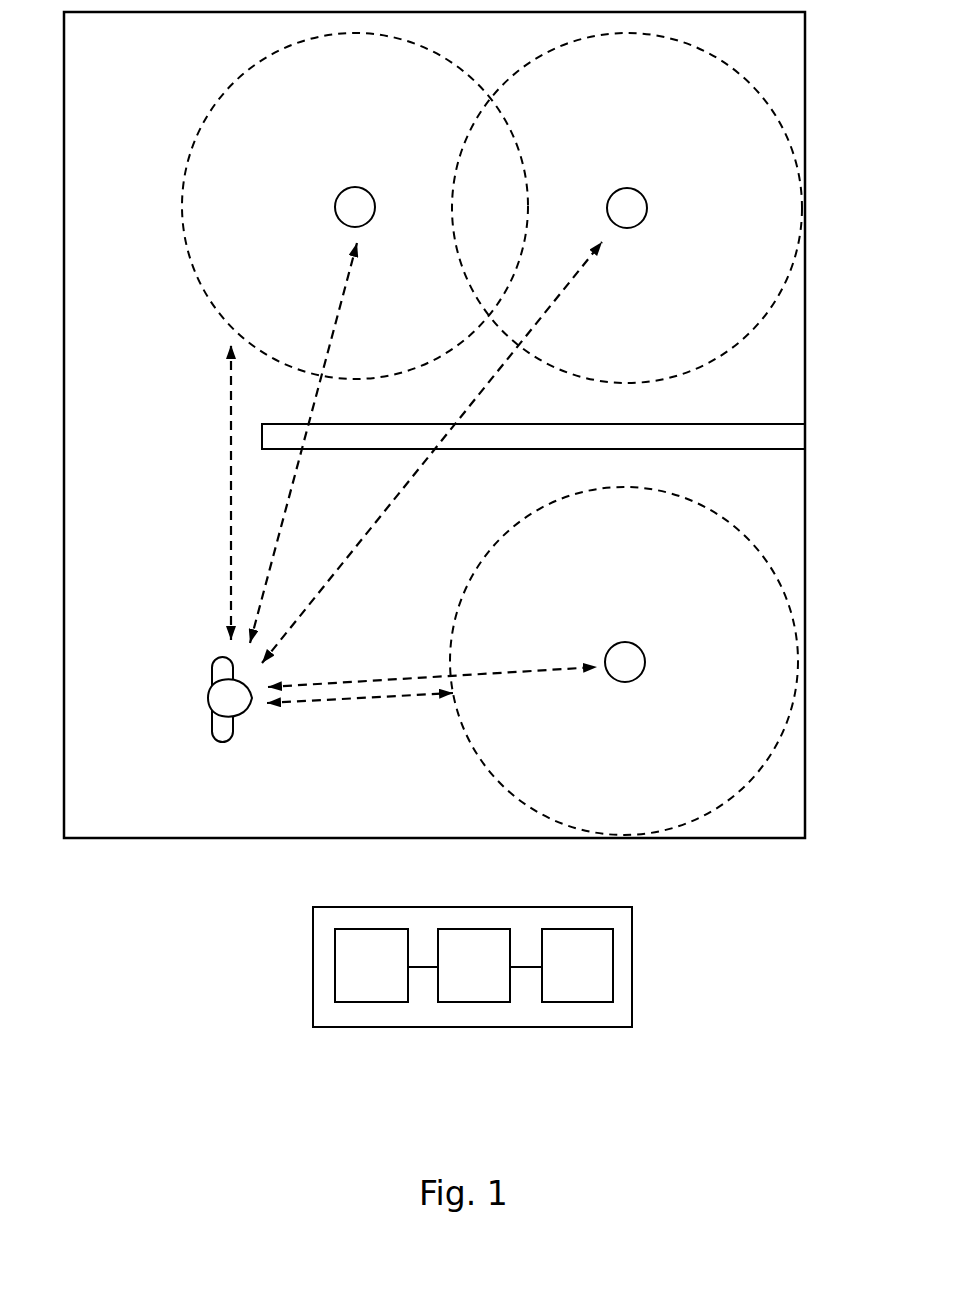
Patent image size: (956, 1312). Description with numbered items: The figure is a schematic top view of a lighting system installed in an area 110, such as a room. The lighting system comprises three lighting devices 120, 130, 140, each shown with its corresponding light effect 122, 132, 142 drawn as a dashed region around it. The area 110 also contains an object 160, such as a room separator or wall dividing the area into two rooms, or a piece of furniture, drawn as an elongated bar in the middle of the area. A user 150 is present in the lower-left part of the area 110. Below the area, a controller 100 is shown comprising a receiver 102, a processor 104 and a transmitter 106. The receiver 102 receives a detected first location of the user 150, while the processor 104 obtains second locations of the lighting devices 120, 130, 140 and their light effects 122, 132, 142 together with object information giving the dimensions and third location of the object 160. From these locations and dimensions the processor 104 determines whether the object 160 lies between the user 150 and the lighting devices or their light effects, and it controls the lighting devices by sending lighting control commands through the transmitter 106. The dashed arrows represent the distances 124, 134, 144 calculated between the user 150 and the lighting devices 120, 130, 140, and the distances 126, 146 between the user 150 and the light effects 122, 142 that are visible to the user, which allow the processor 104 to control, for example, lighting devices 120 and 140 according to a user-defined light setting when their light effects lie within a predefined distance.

The controller 100 is at (612, 1028).
The receiver 102 is at (372, 988).
The processor 104 is at (472, 988).
The transmitter 106 is at (571, 988).
The area 110 is at (148, 875).
The lighting device 120 is at (355, 207).
The light effect 122 is at (255, 78).
The distance 124 is at (265, 577).
The distance 126 is at (229, 502).
The lighting device 130 is at (630, 208).
The light effect 132 is at (657, 372).
The distance 134 is at (423, 463).
The lighting device 140 is at (630, 662).
The light effect 142 is at (463, 630).
The distance 144 is at (407, 683).
The distance 146 is at (327, 700).
The user 150 is at (227, 698).
The object 160 is at (268, 438).